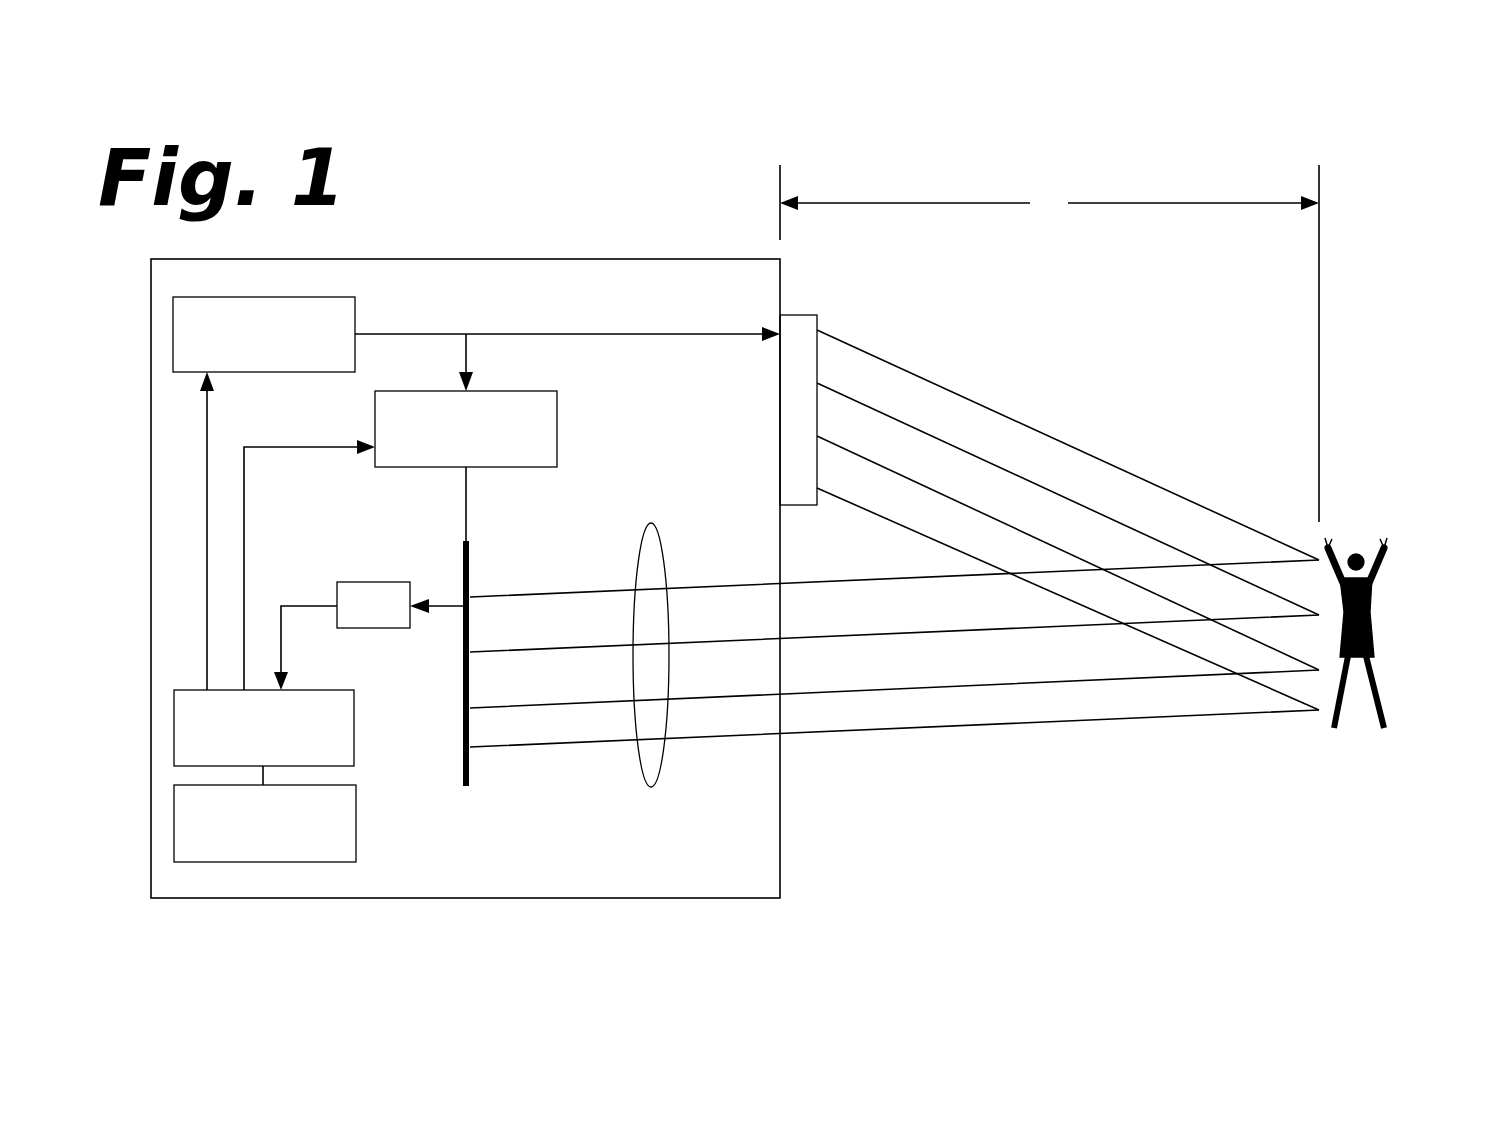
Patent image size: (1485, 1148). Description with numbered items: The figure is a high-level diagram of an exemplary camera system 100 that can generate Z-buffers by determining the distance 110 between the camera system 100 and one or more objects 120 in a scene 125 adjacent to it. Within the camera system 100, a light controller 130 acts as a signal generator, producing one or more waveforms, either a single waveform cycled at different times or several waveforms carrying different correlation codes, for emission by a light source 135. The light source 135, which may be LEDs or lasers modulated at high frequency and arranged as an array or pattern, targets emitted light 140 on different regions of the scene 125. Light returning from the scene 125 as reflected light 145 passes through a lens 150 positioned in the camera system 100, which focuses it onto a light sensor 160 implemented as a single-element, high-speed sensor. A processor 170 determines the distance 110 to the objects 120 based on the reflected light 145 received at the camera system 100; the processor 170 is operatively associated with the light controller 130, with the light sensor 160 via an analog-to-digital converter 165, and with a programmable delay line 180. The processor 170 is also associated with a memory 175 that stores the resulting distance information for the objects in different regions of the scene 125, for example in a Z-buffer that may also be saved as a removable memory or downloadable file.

The camera system 100 is at (465, 578).
The distance 110 is at (1135, 195).
The object 120 is at (1331, 728).
The scene 125 is at (1362, 495).
The light controller 130 is at (260, 373).
The light source 135 is at (798, 315).
The emitted light 140 is at (1023, 423).
The reflected light 145 is at (1020, 723).
The lens 150 is at (657, 523).
The light sensor 160 is at (461, 560).
The analog-to-digital (A/D) converter 165 is at (363, 582).
The processor 170 is at (354, 725).
The memory 175 is at (356, 831).
The programmable delay line 180 is at (557, 435).